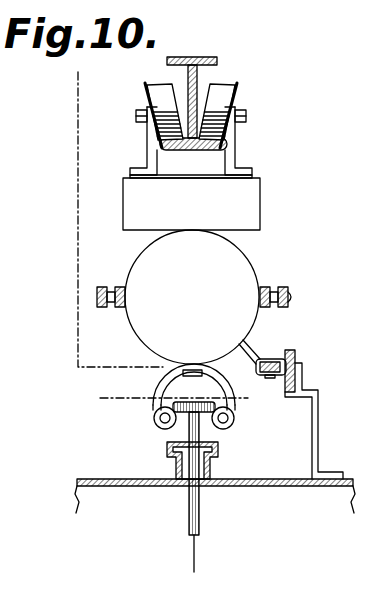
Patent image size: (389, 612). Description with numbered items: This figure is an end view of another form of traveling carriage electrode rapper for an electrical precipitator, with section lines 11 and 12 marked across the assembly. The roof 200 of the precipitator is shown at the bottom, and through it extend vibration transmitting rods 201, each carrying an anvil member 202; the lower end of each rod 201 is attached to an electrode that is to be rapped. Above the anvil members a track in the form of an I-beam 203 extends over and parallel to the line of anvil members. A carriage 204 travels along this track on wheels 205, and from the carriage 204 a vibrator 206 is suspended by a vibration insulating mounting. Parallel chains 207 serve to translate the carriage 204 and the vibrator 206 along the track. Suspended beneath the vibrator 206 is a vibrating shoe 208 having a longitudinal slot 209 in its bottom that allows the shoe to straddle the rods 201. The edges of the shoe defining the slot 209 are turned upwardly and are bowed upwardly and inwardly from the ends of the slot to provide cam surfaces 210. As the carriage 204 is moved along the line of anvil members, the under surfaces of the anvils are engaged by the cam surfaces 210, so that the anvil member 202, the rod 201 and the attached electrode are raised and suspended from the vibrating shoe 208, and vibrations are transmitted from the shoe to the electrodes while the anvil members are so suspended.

The roof 200 is at (85, 478).
The vibration transmitting rod 201 is at (186, 518).
The anvil member 202 is at (160, 397).
The I-beam 203 is at (204, 55).
The carriage 204 is at (246, 198).
The wheel 205 is at (222, 97).
The vibrator 206 is at (240, 261).
The chain 207 is at (289, 283).
The vibrating shoe 208 is at (166, 366).
The longitudinal slot 209 is at (222, 435).
The cam surface 210 is at (153, 416).
The section line 11- 11 is at (72, 80).
The section line 12- 12 is at (104, 392).